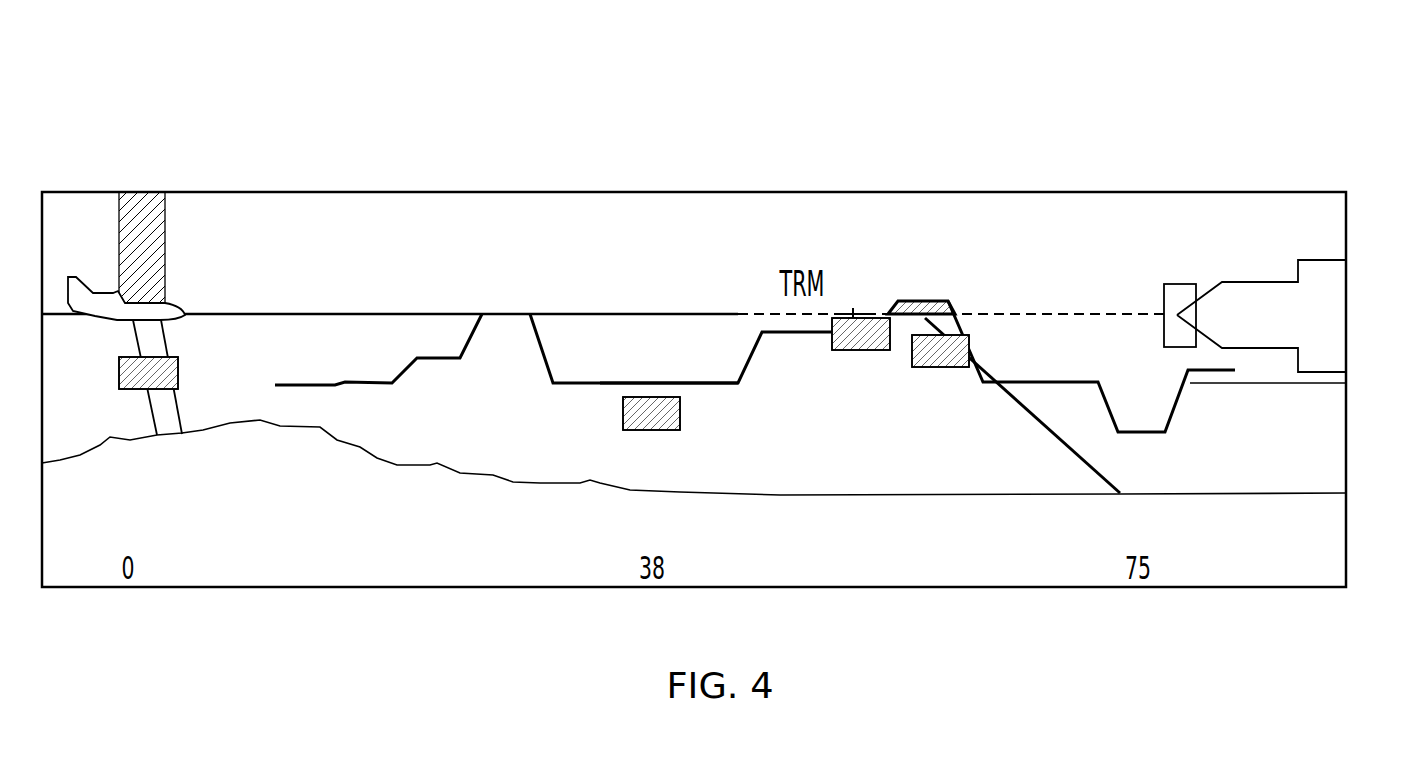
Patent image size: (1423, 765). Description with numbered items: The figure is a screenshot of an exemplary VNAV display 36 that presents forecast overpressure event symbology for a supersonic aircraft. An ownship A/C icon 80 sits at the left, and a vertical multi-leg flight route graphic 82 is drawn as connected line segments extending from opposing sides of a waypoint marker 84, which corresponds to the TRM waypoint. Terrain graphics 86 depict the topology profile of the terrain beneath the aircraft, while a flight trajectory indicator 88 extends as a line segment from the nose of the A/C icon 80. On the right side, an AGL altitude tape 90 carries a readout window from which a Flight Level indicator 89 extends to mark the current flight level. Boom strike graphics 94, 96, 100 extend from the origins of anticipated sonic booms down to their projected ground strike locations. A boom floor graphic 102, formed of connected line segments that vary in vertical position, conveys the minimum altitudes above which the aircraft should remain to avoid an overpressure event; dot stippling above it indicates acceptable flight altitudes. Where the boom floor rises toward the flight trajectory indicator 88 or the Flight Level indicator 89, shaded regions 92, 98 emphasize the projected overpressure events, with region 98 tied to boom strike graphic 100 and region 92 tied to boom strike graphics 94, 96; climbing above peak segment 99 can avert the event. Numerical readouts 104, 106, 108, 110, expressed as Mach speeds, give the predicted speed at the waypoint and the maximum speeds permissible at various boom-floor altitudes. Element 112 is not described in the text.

The VNAV display 36 is at (176, 135).
The ownship A/C icon 80 is at (94, 320).
The vertical multi-leg flight route graphic 82 is at (637, 312).
The waypoint marker 84 is at (852, 308).
The terrain graphics 86 is at (201, 521).
The flight trajectory indicator 88 is at (360, 312).
The Flight Level indicator 89 is at (1047, 312).
The AGL altitude tape 90 is at (1352, 202).
The shaded region 92 is at (164, 243).
The boom strike graphic 94 is at (151, 417).
The boom strike graphic 96 is at (180, 412).
The shaded region 98 is at (951, 300).
The peak segment 99 is at (920, 299).
The boom strike graphic 100 is at (1047, 426).
The boom floor graphic 102 is at (384, 391).
The numerical readout 104 is at (179, 372).
The numerical readout 106 is at (622, 413).
The numerical readout 108 is at (860, 351).
The numerical readout 110 is at (940, 368).
The clearance profile floor 112 is at (722, 386).